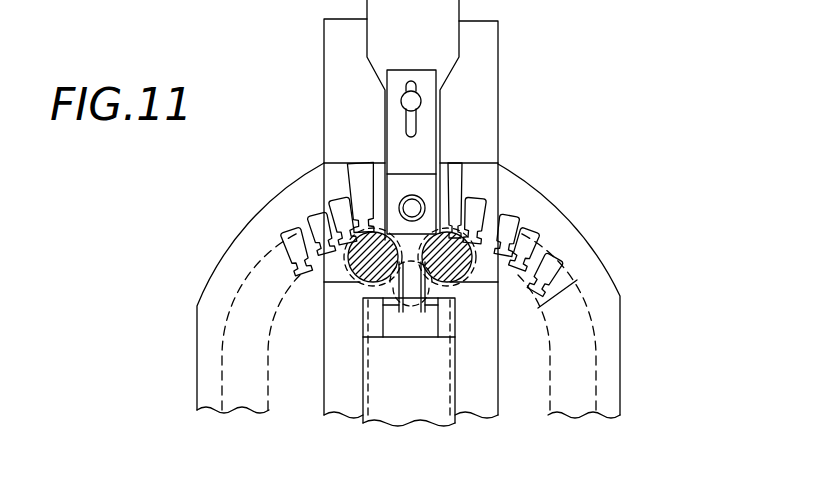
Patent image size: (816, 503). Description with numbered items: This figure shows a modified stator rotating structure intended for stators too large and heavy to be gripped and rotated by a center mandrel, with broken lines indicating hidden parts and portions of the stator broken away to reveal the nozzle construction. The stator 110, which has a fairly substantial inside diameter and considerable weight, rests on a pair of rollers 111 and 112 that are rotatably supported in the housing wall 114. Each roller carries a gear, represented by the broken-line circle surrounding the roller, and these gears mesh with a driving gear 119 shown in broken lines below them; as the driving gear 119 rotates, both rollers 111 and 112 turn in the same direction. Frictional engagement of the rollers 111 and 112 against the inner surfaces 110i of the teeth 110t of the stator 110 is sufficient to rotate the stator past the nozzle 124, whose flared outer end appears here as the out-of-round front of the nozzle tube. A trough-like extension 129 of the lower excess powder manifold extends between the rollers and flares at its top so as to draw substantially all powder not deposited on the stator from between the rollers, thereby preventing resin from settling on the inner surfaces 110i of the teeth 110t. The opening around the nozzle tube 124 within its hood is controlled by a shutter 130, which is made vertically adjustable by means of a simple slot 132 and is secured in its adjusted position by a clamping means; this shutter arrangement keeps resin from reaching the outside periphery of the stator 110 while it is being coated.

The stator 110 is at (563, 216).
The teeth of stator 110t is at (560, 285).
The inner surfaces of the teeth 110i is at (543, 303).
The roller 111 is at (462, 280).
The roller 112 is at (365, 273).
The housing wall 114 is at (502, 69).
The driving gear 119 is at (411, 318).
The nozzle 124 is at (413, 195).
The trough-like extension 129 is at (383, 337).
The shutter 130 is at (414, 68).
The slot 132 is at (418, 122).